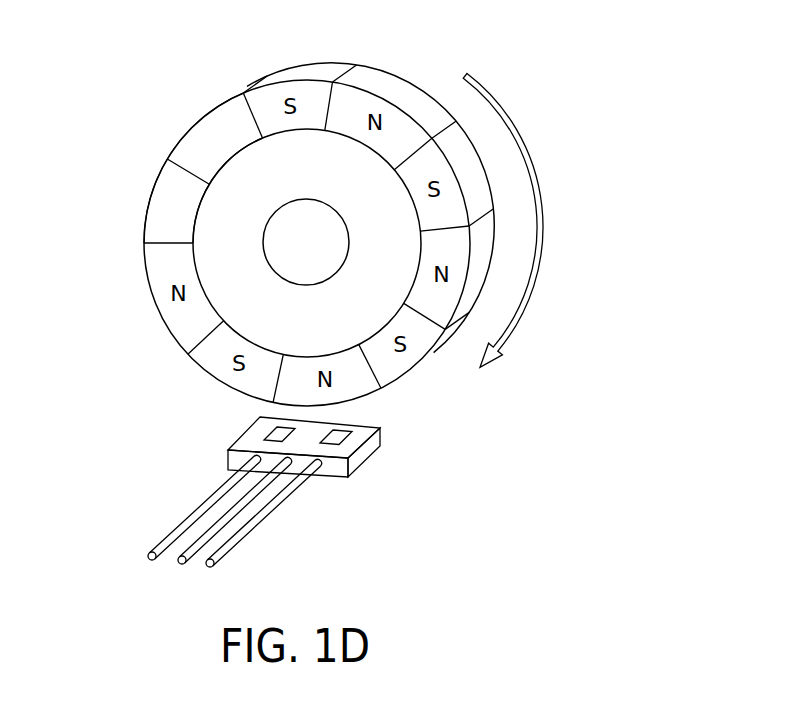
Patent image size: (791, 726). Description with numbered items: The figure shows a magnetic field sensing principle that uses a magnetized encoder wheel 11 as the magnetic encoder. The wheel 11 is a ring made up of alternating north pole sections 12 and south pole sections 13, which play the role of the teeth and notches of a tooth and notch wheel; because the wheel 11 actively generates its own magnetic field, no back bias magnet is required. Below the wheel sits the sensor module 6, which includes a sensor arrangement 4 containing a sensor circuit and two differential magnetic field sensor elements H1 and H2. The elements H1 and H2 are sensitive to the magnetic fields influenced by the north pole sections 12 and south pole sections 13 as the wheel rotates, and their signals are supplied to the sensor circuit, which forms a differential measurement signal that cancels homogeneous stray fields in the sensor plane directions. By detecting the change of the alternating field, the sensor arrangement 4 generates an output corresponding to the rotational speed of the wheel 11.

The sensor arrangement 4 is at (381, 446).
The sensor module 6 is at (186, 463).
The magnetized encoder wheel 11 is at (215, 267).
The north pole sections 12 is at (192, 143).
The south pole sections 13 is at (163, 220).
The differential magnetic field sensor element H1 is at (262, 431).
The differential magnetic field sensor element H2 is at (345, 432).